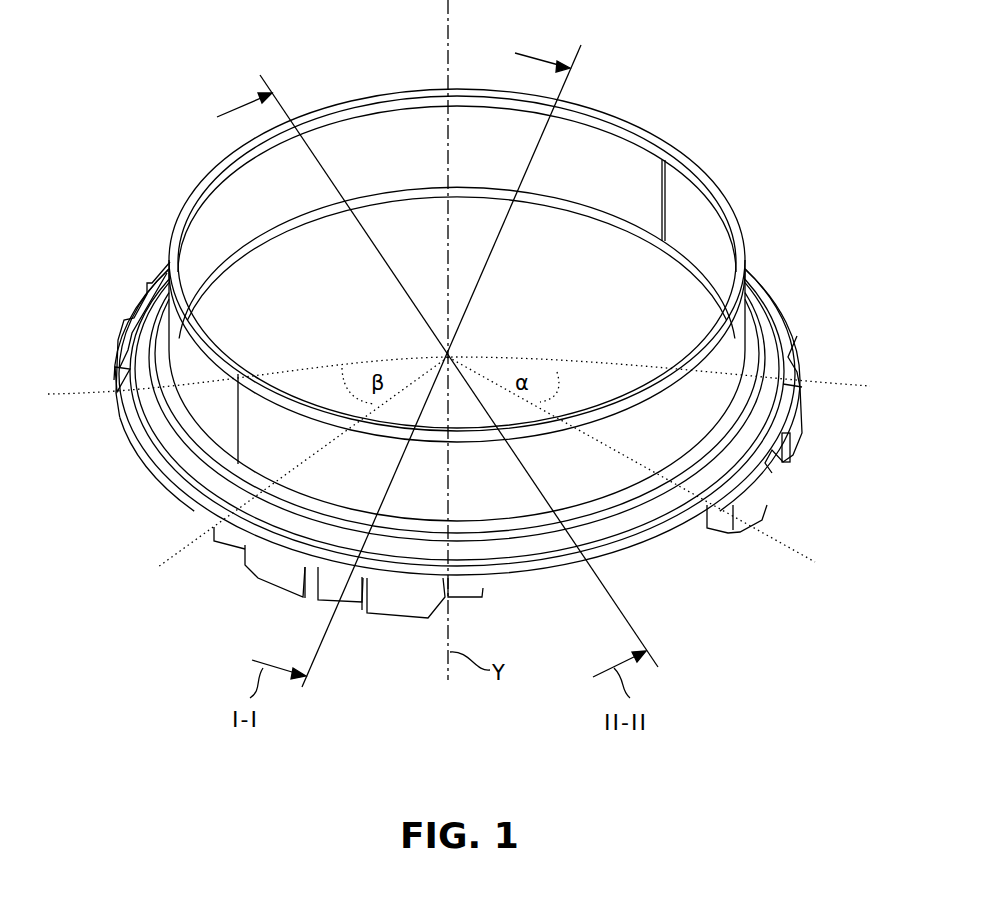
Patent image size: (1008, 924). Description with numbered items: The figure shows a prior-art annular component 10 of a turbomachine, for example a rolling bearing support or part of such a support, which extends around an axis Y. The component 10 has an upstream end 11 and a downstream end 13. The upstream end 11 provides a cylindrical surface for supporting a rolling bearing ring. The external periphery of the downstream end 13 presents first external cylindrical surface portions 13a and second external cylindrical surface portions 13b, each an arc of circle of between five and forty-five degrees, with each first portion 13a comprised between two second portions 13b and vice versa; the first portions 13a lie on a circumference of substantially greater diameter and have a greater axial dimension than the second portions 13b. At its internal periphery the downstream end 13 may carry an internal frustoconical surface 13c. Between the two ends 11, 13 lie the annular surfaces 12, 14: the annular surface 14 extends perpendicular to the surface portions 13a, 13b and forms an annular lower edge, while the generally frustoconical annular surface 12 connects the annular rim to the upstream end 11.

The annular component 10 is at (178, 94).
The upstream end 11 is at (215, 413).
The annular surface 12 is at (540, 553).
The downstream end 13 is at (793, 327).
The first external cylindrical surface portion 13a is at (277, 577).
The second external cylindrical surface portion 13b is at (125, 432).
The internal frustoconical surface 13c is at (567, 207).
The annular surface 14 is at (125, 350).